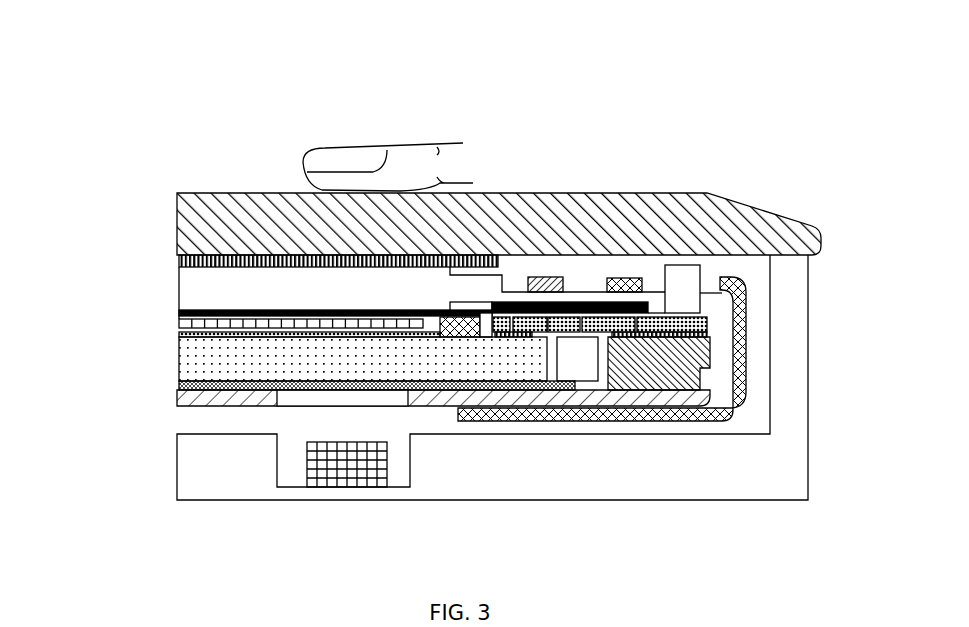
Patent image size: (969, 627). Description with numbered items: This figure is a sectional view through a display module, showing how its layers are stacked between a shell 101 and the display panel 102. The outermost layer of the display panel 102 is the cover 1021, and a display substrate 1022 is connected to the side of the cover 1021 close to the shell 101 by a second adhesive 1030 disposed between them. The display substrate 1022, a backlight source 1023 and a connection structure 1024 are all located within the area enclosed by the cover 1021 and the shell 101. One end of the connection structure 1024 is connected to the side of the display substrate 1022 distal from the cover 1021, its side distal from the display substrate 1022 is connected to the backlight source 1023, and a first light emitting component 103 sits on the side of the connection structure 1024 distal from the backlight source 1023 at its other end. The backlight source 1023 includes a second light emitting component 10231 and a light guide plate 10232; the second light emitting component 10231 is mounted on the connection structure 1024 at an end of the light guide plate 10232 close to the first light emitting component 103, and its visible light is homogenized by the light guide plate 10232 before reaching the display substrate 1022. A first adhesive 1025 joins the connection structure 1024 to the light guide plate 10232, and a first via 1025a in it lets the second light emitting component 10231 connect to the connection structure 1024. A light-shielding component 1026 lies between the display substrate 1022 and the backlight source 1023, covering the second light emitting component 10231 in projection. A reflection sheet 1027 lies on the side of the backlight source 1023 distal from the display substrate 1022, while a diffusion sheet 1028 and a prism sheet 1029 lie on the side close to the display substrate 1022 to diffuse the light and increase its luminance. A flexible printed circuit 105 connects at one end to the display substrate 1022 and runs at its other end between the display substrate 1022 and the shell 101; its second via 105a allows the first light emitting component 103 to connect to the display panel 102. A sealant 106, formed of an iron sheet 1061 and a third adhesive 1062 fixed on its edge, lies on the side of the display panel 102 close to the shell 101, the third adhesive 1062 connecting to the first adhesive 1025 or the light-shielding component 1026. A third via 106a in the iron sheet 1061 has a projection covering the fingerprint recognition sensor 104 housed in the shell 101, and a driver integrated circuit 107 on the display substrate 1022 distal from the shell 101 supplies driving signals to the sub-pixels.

The shell 101 is at (455, 468).
The display panel 102 is at (848, 66).
The cover 1021 is at (792, 235).
The display substrate 1022 is at (294, 286).
The backlight source 1023 is at (520, 100).
The second light emitting component 10231 is at (577, 360).
The light guide plate 10232 is at (515, 362).
The connection structure 1024 is at (684, 315).
The first adhesive 1025 is at (644, 306).
The first via 1025a is at (603, 335).
The light-shielding component 1026 is at (487, 309).
The reflection sheet 1027 is at (176, 382).
The diffusion sheet 1028 is at (176, 331).
The prism sheet 1029 is at (189, 320).
The second adhesive 1030 is at (342, 260).
The first light emitting component 103 is at (705, 306).
The fingerprint recognition sensor 104 is at (351, 468).
The flexible printed circuit 105 is at (622, 412).
The second via 105a is at (706, 283).
The sealant 106 is at (464, 462).
The iron sheet 1061 is at (682, 396).
The third adhesive 1062 is at (676, 350).
The third via 106a is at (317, 398).
The driver integrated circuit 107 is at (554, 295).